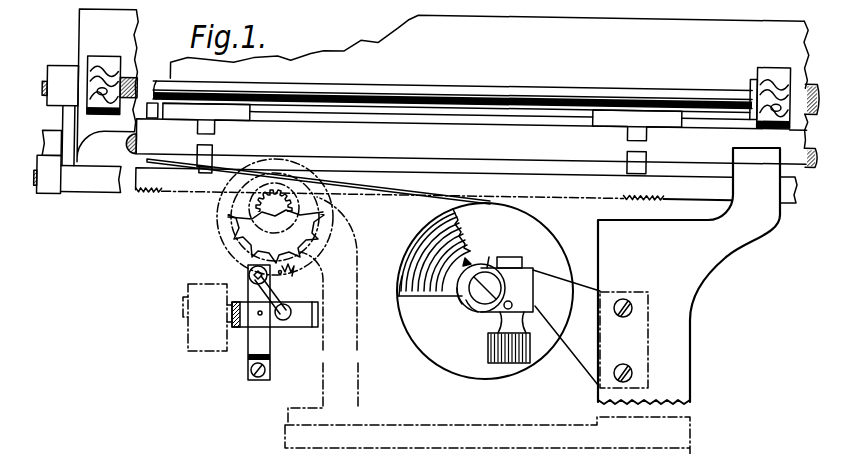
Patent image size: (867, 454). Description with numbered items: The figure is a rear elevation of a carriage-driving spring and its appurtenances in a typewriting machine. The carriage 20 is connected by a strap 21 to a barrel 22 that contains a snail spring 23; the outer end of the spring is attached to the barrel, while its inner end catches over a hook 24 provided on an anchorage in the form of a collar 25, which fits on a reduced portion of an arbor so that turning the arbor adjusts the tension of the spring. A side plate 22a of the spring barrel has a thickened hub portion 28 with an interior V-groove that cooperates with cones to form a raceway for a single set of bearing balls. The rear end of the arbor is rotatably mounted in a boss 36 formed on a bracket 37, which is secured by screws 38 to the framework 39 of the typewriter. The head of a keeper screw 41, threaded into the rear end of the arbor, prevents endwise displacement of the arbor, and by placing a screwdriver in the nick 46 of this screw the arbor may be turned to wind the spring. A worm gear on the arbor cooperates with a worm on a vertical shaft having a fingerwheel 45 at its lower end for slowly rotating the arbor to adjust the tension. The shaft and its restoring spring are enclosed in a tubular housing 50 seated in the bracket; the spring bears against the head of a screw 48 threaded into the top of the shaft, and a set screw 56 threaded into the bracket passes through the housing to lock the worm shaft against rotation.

The carriage 20 is at (612, 113).
The strap 21 is at (340, 180).
The barrel 22 is at (411, 240).
The side plate 22a is at (430, 354).
The snail spring 23 is at (406, 282).
The hook 24 is at (470, 260).
The collar 25 is at (457, 297).
The hub portion 28 is at (479, 316).
The boss 36 is at (488, 266).
The bracket 37 is at (575, 333).
The screws 38 is at (628, 318).
The framework 39 is at (698, 317).
The keeper screw 41 is at (497, 291).
The fingerwheel 45 is at (489, 362).
The nick 46 is at (472, 306).
The screw 48 is at (510, 256).
The housing 50 is at (525, 270).
The set screw 56 is at (513, 305).